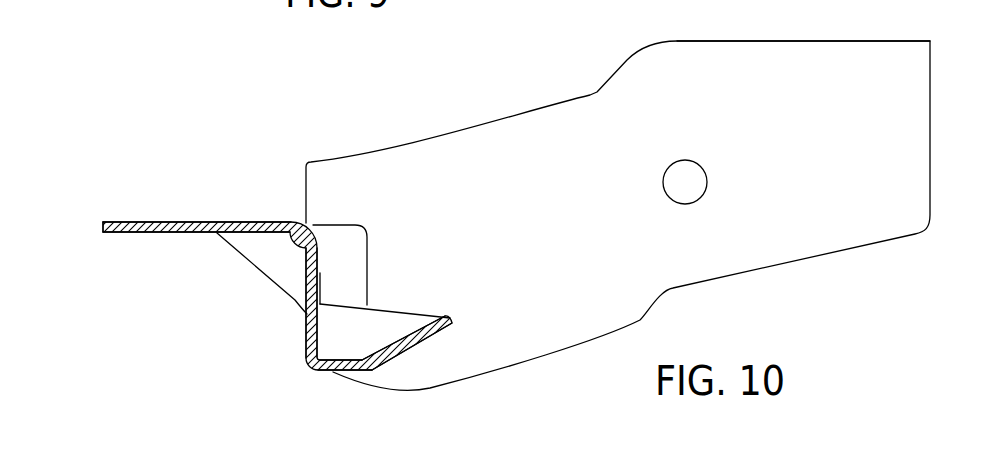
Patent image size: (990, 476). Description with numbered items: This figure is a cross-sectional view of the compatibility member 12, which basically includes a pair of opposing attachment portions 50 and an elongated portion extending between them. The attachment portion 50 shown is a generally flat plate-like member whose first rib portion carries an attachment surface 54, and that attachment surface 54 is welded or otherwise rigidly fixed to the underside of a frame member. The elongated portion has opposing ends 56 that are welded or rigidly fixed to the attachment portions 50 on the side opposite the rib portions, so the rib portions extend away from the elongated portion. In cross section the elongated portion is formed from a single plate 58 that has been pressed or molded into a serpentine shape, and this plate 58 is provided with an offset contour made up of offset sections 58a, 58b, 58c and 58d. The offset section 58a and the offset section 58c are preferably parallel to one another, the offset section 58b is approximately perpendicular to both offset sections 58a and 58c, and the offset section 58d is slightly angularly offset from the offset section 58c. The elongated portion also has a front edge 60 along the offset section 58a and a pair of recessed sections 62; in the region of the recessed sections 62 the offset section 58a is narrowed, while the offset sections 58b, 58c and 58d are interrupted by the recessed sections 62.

The compatibility member 12 is at (390, 89).
The attachment portion 50 is at (895, 128).
The attachment surface 54 is at (858, 40).
The opposing end 56 is at (367, 250).
The plate 58 is at (303, 266).
The offset section 58a is at (142, 222).
The offset section 58b is at (318, 272).
The offset section 58c is at (343, 357).
The offset section 58d is at (403, 337).
The front edge 60 is at (103, 228).
The recessed section 62 is at (270, 255).